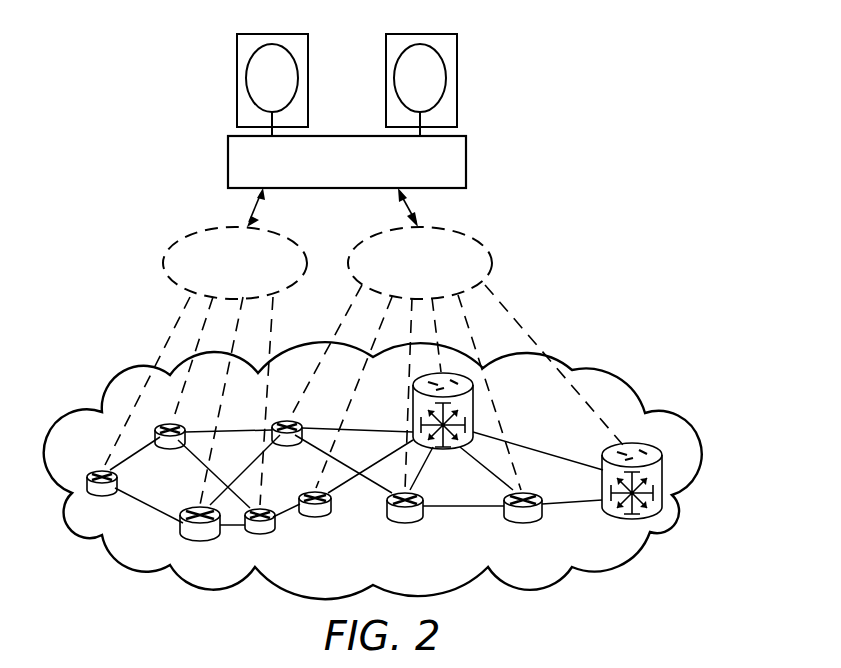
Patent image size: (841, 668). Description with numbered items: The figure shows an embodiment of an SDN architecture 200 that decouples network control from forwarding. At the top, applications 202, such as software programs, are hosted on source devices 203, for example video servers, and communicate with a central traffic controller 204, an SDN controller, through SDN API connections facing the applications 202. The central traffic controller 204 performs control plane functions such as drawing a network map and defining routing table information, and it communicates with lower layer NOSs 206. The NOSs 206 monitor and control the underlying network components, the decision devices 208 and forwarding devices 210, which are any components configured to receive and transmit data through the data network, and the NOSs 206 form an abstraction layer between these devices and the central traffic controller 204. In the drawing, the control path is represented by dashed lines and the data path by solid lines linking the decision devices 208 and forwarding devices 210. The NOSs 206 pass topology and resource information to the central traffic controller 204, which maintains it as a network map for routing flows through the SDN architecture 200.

The SDN architecture 200 is at (102, 73).
The application 202 is at (287, 46).
The source device 203 is at (309, 78).
The central traffic controller 204 is at (467, 162).
The NOS 206 is at (159, 266).
The decision device 208 is at (285, 419).
The forwarding device 210 is at (474, 410).